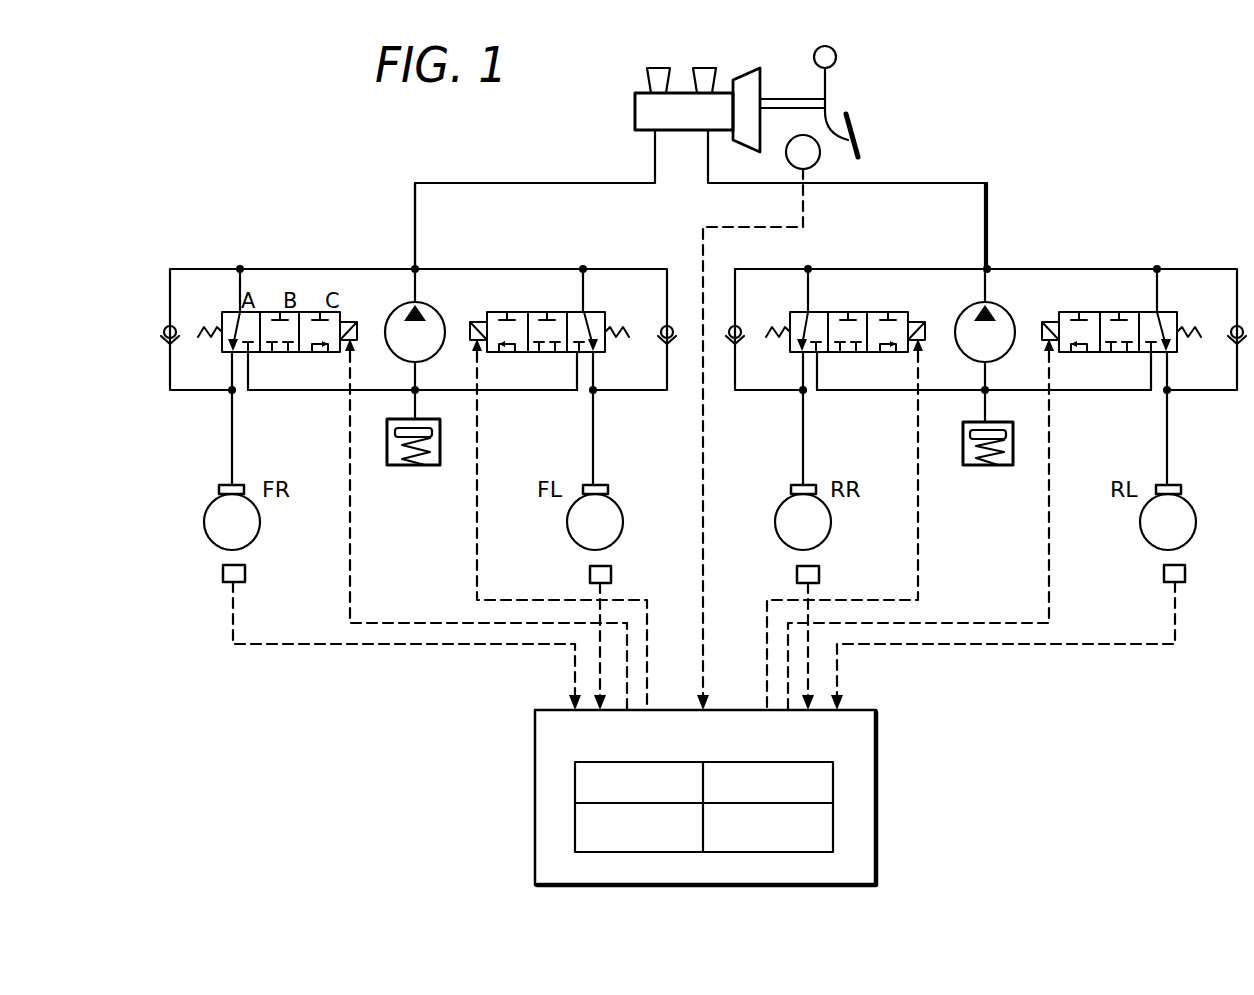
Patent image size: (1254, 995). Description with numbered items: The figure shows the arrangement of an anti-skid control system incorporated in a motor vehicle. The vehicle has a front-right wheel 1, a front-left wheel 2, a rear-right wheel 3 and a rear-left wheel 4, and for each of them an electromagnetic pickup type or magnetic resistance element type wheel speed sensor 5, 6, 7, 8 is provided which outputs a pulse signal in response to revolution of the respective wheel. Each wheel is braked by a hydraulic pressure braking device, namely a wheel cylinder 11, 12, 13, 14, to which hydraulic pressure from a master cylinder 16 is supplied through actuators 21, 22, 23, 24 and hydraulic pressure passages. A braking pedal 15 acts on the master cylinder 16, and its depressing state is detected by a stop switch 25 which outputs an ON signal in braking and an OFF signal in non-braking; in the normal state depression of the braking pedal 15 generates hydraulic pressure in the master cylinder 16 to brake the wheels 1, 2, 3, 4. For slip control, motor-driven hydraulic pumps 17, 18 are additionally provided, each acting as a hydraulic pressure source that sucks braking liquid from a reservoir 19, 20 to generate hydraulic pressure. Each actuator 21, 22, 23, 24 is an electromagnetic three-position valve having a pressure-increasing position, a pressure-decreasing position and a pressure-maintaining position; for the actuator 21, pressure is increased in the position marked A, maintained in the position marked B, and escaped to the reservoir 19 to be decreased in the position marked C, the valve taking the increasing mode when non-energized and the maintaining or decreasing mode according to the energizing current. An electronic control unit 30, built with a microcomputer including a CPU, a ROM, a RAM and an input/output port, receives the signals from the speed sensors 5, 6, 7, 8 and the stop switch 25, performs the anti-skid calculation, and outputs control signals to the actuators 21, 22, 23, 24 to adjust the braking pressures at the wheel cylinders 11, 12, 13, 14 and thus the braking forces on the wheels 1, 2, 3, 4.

The front-right wheel 1 is at (204, 523).
The front-left wheel 2 is at (568, 523).
The rear-right wheel 3 is at (776, 523).
The rear-left wheel 4 is at (1142, 523).
The wheel speed sensor 5 is at (245, 572).
The wheel speed sensor 6 is at (590, 572).
The wheel speed sensor 7 is at (820, 572).
The wheel speed sensor 8 is at (1164, 572).
The wheel cylinder 11 is at (237, 482).
The wheel cylinder 12 is at (600, 482).
The wheel cylinder 13 is at (800, 482).
The wheel cylinder 14 is at (1166, 482).
The braking pedal 15 is at (850, 118).
The master cylinder 16 is at (635, 112).
The hydraulic pump 17 is at (436, 318).
The hydraulic pump 18 is at (1010, 317).
The reservoir 19 is at (419, 466).
The reservoir 20 is at (976, 466).
The actuator 21 is at (280, 353).
The actuator 22 is at (530, 312).
The actuator 23 is at (862, 312).
The actuator 24 is at (1096, 312).
The stop switch 25 is at (820, 155).
The electronic control unit 30 is at (877, 806).